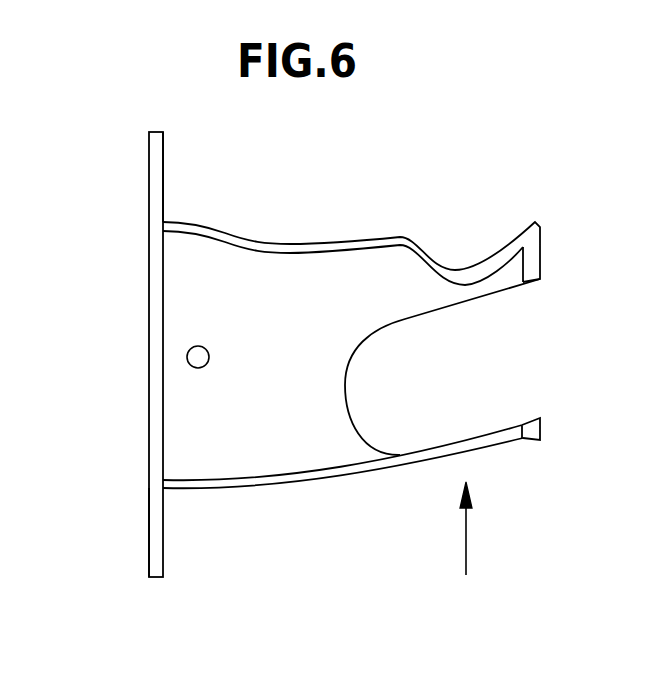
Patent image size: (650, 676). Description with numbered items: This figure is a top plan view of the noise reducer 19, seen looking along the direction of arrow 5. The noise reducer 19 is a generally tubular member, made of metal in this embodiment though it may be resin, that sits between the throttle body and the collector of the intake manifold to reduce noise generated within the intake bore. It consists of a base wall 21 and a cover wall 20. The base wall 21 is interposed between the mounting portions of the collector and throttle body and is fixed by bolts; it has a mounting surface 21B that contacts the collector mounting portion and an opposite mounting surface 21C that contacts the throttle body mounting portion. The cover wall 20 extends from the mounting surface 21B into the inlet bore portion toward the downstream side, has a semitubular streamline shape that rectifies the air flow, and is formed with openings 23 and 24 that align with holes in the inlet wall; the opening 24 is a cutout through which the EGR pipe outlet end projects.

The viewing direction arrow (line V-V of FIG. 5) 5 is at (466, 549).
The noise reducer 19 is at (283, 492).
The cover wall 20 is at (292, 247).
The base wall 21 is at (155, 194).
The mounting surface 21B is at (163, 173).
The opposite mounting surface 21C is at (148, 522).
The opening 23 is at (187, 357).
The opening 24 is at (467, 348).